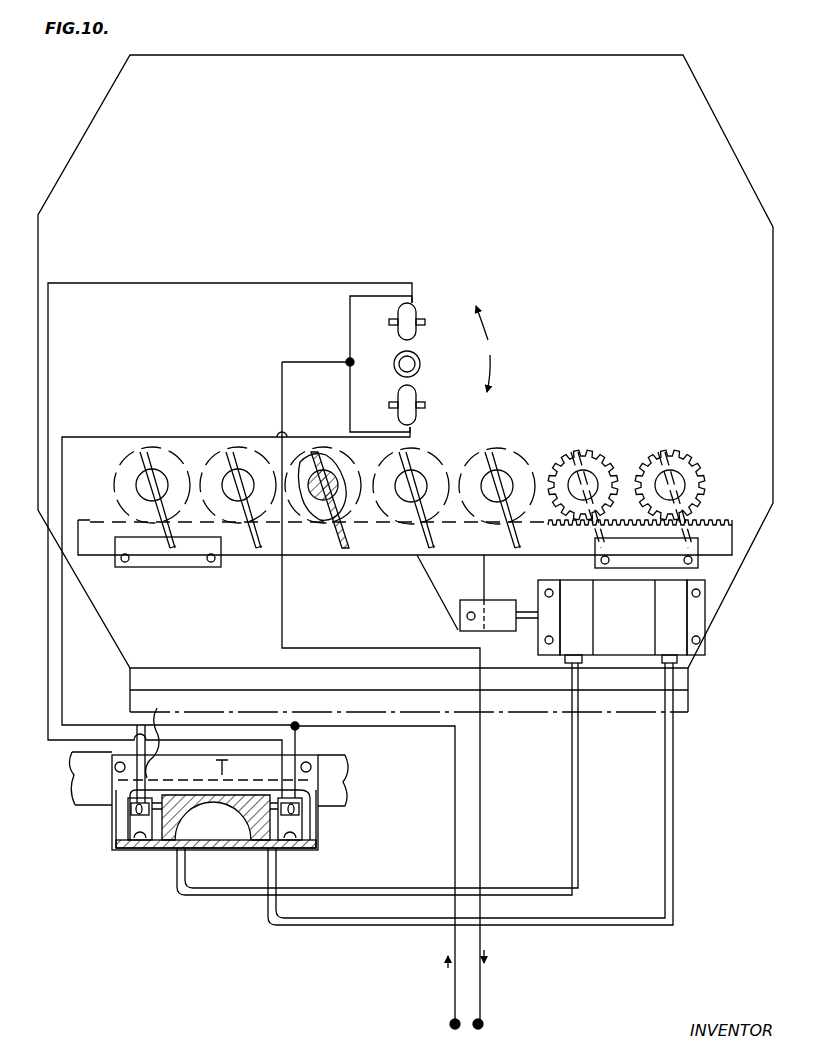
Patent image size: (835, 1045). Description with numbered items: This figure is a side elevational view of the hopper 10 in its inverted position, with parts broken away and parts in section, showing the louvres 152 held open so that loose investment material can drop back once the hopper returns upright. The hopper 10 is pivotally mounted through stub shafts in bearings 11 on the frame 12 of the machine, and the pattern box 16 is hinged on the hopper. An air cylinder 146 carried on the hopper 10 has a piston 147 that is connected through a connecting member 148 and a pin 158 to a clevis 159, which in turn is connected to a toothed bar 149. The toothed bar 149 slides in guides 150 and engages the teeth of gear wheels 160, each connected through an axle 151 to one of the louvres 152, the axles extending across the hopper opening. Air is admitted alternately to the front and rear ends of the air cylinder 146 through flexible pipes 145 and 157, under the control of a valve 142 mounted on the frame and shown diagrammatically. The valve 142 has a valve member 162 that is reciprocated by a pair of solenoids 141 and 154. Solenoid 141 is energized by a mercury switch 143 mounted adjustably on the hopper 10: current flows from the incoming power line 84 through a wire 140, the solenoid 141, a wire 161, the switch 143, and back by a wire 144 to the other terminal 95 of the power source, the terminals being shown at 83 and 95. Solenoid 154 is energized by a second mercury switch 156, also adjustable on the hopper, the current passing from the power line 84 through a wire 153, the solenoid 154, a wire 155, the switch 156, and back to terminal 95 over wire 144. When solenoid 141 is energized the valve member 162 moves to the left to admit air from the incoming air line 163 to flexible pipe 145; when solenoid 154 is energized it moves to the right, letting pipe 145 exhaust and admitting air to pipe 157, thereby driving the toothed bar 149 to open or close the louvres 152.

The hopper 10 is at (758, 377).
The bearings 11 is at (420, 364).
The frame 12 is at (348, 784).
The pattern box 16 is at (135, 697).
The terminal 83 is at (450, 1023).
The incoming power line 84 is at (418, 728).
The terminal 95 is at (482, 1019).
The wire 140 is at (164, 747).
The solenoid 141 is at (127, 822).
The valve 142 is at (317, 840).
The mercury switch 143 is at (417, 394).
The wire 144 is at (360, 651).
The flexible pipe 145 is at (276, 858).
The air cylinder 146 is at (630, 640).
The piston 147 is at (527, 636).
The connecting member 148 is at (486, 633).
The toothed bar 149 is at (722, 538).
The guides 150 is at (180, 556).
The axle 151 is at (688, 475).
The louvres 152 is at (672, 462).
The wire 153 is at (297, 746).
The solenoid 154 is at (313, 830).
The wire 155 is at (158, 284).
The mercury switch 156 is at (414, 334).
The flexible pipe 157 is at (178, 863).
The pin 158 is at (466, 617).
The clevis 159 is at (478, 583).
The gear wheels 160 is at (706, 490).
The wire 161 is at (175, 437).
The valve member 162 is at (157, 848).
The incoming air line 163 is at (224, 768).